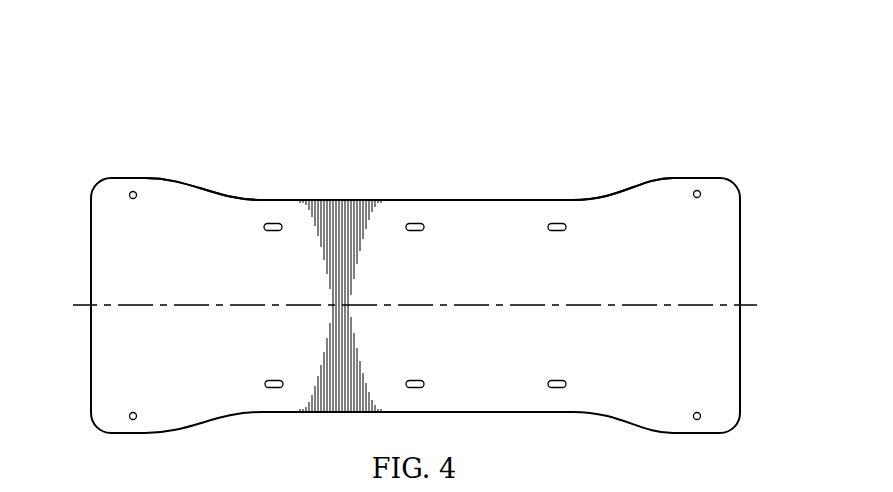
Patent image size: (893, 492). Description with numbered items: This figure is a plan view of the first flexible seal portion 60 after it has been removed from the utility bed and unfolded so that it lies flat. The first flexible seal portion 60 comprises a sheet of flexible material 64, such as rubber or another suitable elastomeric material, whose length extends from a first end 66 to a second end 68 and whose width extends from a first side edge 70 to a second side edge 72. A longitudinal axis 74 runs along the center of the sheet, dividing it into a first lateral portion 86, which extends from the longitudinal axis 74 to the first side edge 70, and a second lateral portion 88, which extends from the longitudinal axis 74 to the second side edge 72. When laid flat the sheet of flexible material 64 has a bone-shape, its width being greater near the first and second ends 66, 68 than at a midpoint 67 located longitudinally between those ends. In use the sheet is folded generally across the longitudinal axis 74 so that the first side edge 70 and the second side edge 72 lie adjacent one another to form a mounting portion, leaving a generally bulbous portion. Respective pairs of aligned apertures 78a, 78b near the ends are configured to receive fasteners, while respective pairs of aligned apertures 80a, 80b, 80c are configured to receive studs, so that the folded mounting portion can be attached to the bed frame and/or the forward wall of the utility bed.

The first flexible seal portion 60 is at (221, 69).
The sheet of flexible material 64 is at (134, 173).
The first end 66 is at (91, 219).
The midpoint 67 is at (417, 200).
The second end 68 is at (740, 222).
The first side edge 70 is at (543, 200).
The second side edge 72 is at (507, 413).
The longitudinal axis 74 is at (639, 305).
The aligned apertures 78a is at (132, 199).
The aligned apertures 78b is at (697, 198).
The aligned apertures 80a is at (273, 231).
The aligned apertures 80b is at (415, 231).
The aligned apertures 80c is at (557, 231).
The first lateral portion 86 is at (471, 265).
The second lateral portion 88 is at (471, 370).